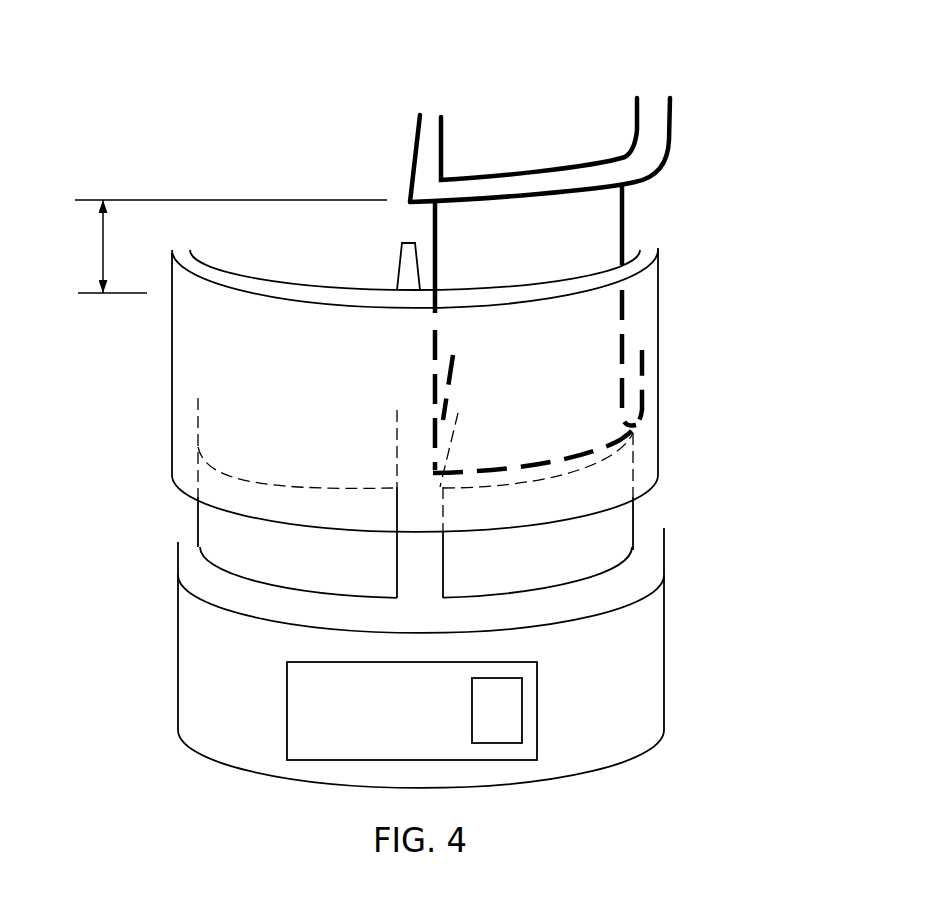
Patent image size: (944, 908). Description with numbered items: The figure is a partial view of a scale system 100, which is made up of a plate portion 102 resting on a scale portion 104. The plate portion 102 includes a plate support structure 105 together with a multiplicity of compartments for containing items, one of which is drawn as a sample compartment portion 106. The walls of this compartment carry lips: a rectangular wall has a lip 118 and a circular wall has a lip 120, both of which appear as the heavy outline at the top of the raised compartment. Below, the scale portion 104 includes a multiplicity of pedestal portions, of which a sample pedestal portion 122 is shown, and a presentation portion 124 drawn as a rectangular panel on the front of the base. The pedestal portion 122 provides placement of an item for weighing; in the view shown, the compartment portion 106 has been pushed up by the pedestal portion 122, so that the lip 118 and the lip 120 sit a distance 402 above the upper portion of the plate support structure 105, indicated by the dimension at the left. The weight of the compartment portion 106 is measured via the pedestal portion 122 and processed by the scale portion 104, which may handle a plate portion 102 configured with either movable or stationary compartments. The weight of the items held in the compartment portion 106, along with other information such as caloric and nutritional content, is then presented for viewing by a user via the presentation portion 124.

The scale system 100 is at (237, 98).
The plate portion 102 is at (703, 248).
The scale portion 104 is at (665, 698).
The plate support structure 105 is at (663, 347).
The compartment portion 106 is at (625, 224).
The lip 118 is at (410, 176).
The lip 120 is at (672, 160).
The pedestal portion 122 is at (635, 515).
The presentation portion 124 is at (332, 728).
The distance 402 is at (100, 248).